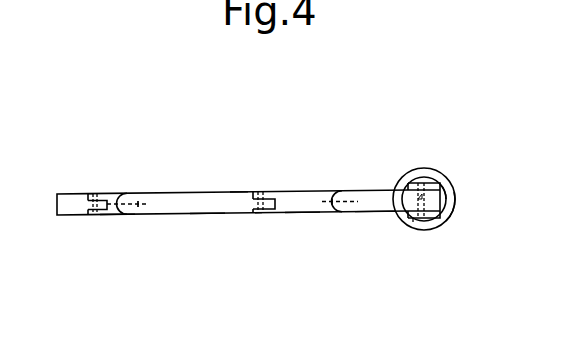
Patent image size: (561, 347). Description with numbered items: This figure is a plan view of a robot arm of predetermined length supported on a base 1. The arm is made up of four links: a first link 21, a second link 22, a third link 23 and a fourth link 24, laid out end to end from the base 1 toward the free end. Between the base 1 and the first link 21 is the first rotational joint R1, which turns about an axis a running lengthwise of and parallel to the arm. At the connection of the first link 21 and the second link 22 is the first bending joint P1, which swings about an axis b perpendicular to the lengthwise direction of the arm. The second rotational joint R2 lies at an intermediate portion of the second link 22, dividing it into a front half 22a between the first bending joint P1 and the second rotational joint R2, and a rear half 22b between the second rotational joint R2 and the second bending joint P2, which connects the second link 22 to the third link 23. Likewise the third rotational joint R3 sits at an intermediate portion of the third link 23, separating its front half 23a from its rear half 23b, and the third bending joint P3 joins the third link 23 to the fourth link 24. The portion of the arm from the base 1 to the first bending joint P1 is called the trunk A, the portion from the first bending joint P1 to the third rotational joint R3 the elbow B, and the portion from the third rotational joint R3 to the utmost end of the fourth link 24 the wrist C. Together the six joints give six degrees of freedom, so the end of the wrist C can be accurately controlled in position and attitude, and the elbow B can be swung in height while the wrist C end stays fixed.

The base 1 is at (457, 197).
The first link 21 is at (438, 228).
The second link 22 is at (317, 192).
The front half of second link 22a is at (372, 212).
The rear half of second link 22b is at (302, 212).
The third link 23 is at (190, 192).
The front half of third link 23a is at (207, 214).
The rear half of third link 23b is at (118, 215).
The fourth link 24 is at (64, 215).
The first bending joint P1 is at (420, 197).
The second bending joint P2 is at (265, 190).
The third bending joint P3 is at (100, 194).
The first rotational joint R1 is at (448, 183).
The second rotational joint R2 is at (338, 192).
The third rotational joint R3 is at (120, 194).
The axis of rotational joints a is at (138, 212).
The axis of bending joints b is at (90, 192).
The trunk A is at (451, 217).
The elbow B is at (238, 186).
The wrist C is at (91, 235).